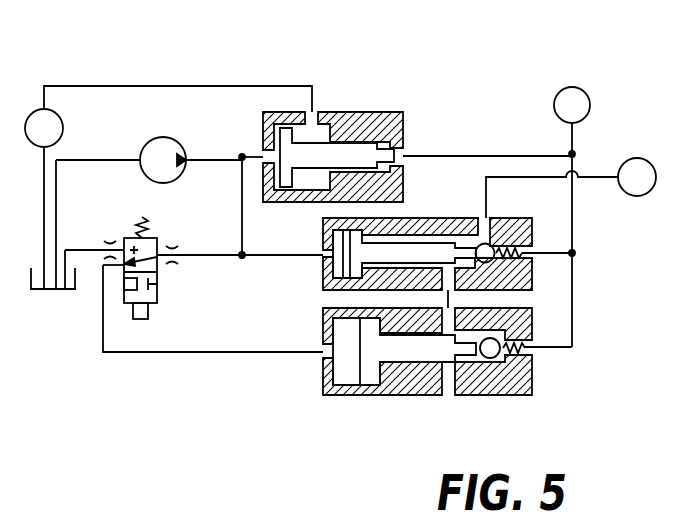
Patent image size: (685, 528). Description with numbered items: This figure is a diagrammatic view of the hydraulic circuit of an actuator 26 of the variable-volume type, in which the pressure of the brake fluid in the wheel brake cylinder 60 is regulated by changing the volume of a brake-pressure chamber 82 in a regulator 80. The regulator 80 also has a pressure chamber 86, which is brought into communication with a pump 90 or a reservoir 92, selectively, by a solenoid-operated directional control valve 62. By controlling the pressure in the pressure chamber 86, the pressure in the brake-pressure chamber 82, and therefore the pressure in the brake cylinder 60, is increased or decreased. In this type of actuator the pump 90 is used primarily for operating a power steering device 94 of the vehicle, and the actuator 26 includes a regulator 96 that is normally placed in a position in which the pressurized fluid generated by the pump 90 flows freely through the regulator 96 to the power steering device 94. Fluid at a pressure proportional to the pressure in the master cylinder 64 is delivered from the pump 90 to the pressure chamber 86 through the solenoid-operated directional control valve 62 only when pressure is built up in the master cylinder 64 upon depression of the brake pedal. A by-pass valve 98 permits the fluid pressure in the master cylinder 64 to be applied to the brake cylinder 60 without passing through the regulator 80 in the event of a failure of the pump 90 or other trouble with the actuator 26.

The actuator 26 is at (456, 93).
The wheel brake cylinder 60 is at (634, 166).
The solenoid-operated directional control valve 62 is at (157, 279).
The master cylinder 64 is at (566, 96).
The regulator 80 is at (414, 386).
The brake-pressure chamber 82 is at (462, 363).
The pressure chamber 86 is at (347, 372).
The pump 90 is at (163, 146).
The reservoir 92 is at (52, 291).
The power steering device 94 is at (50, 128).
The regulator 96 is at (363, 118).
The by-pass valve 98 is at (332, 297).